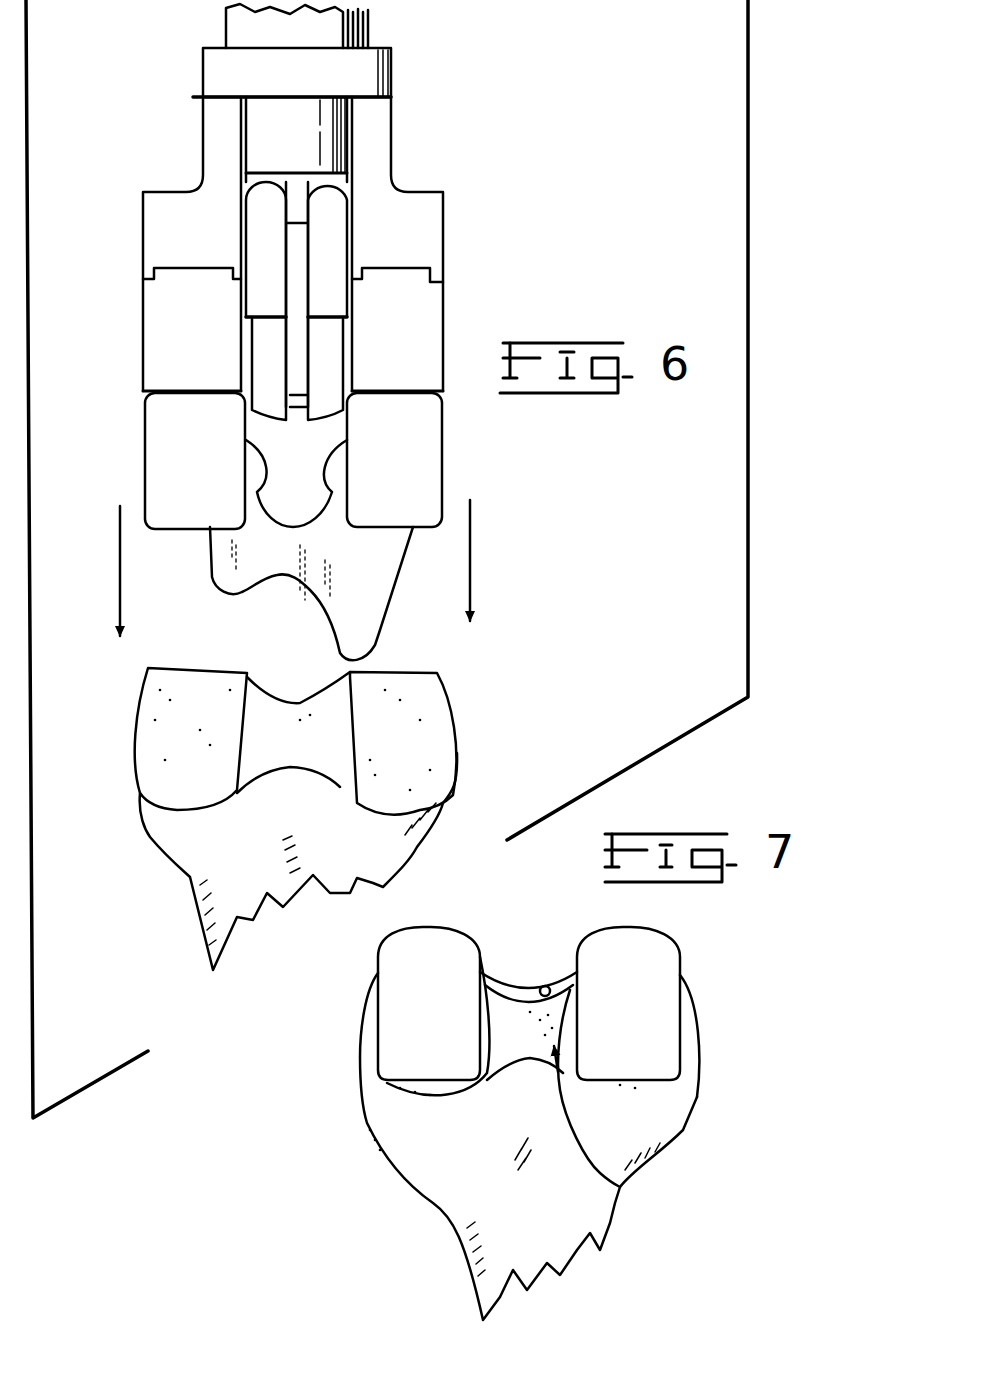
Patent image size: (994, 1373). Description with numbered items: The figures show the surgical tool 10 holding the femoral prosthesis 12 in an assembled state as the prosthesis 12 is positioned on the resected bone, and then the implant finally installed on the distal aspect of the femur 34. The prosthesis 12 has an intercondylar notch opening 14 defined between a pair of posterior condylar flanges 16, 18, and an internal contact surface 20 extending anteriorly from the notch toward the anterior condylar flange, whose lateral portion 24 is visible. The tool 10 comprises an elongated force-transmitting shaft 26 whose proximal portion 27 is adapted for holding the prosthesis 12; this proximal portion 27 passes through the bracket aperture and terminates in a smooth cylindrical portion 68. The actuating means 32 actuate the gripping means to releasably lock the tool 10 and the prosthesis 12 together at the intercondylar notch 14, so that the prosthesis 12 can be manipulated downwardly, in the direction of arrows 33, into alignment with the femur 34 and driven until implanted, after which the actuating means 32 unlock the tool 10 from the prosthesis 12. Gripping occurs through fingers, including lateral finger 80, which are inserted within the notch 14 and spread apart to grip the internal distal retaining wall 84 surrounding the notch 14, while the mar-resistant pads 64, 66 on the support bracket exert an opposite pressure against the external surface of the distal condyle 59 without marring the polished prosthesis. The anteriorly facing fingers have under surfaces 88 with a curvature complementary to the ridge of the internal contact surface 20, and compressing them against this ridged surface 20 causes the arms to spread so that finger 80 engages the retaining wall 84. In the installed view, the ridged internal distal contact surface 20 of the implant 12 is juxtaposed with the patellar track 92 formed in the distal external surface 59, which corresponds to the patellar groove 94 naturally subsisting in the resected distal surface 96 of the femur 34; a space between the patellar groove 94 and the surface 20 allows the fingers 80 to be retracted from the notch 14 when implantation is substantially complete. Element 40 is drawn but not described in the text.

In FIG. 6, the surgical tool 10 is at (104, 131).
In FIG. 6, the femoral prosthesis 12 is at (484, 430).
In FIG. 7, the femoral prosthesis 12 is at (714, 947).
In FIG. 6, the intercondylar notch opening 14 is at (215, 548).
In FIG. 7, the intercondylar notch opening 14 is at (620, 1185).
In FIG. 6, the posterior condylar flange 16 is at (160, 454).
In FIG. 7, the posterior condylar flange 16 is at (395, 1020).
In FIG. 6, the posterior condylar flange 18 is at (423, 470).
In FIG. 7, the posterior condylar flange 18 is at (660, 987).
In FIG. 6, the internal contact surface 20 is at (282, 436).
In FIG. 7, the internal contact surface 20 is at (543, 984).
In FIG. 6, the lateral portion of anterior condylar flange 24 is at (380, 630).
In FIG. 6, the shaft 26 is at (226, 27).
In FIG. 6, the proximal portion of the shaft 27 is at (232, 102).
In FIG. 6, the actuating means 32 is at (380, 41).
In FIG. 6, the arrows indicating downward direction 33 is at (120, 556).
In FIG. 6, the femur 34 is at (466, 748).
In FIG. 7, the femur 34 is at (406, 1193).
In FIG. 6, the guide pins 40 is at (300, 193).
In FIG. 6, the distal condyle external surface 59 is at (443, 400).
In FIG. 7, the distal condyle external surface 59 is at (427, 928).
In FIG. 6, the mar-resistant pad 64 is at (156, 318).
In FIG. 6, the mar-resistant pad 66 is at (432, 303).
In FIG. 6, the smooth cylindrical portion 68 is at (317, 122).
In FIG. 6, the lateral finger 80 is at (238, 403).
In FIG. 6, the internal distal retaining wall 84 is at (245, 407).
In FIG. 6, the under surface of anterior finger 88 is at (353, 400).
In FIG. 7, the patellar track 92 is at (508, 970).
In FIG. 6, the patellar groove 94 is at (300, 703).
In FIG. 7, the patellar groove 94 is at (570, 990).
In FIG. 6, the resected distal surface 96 is at (220, 667).